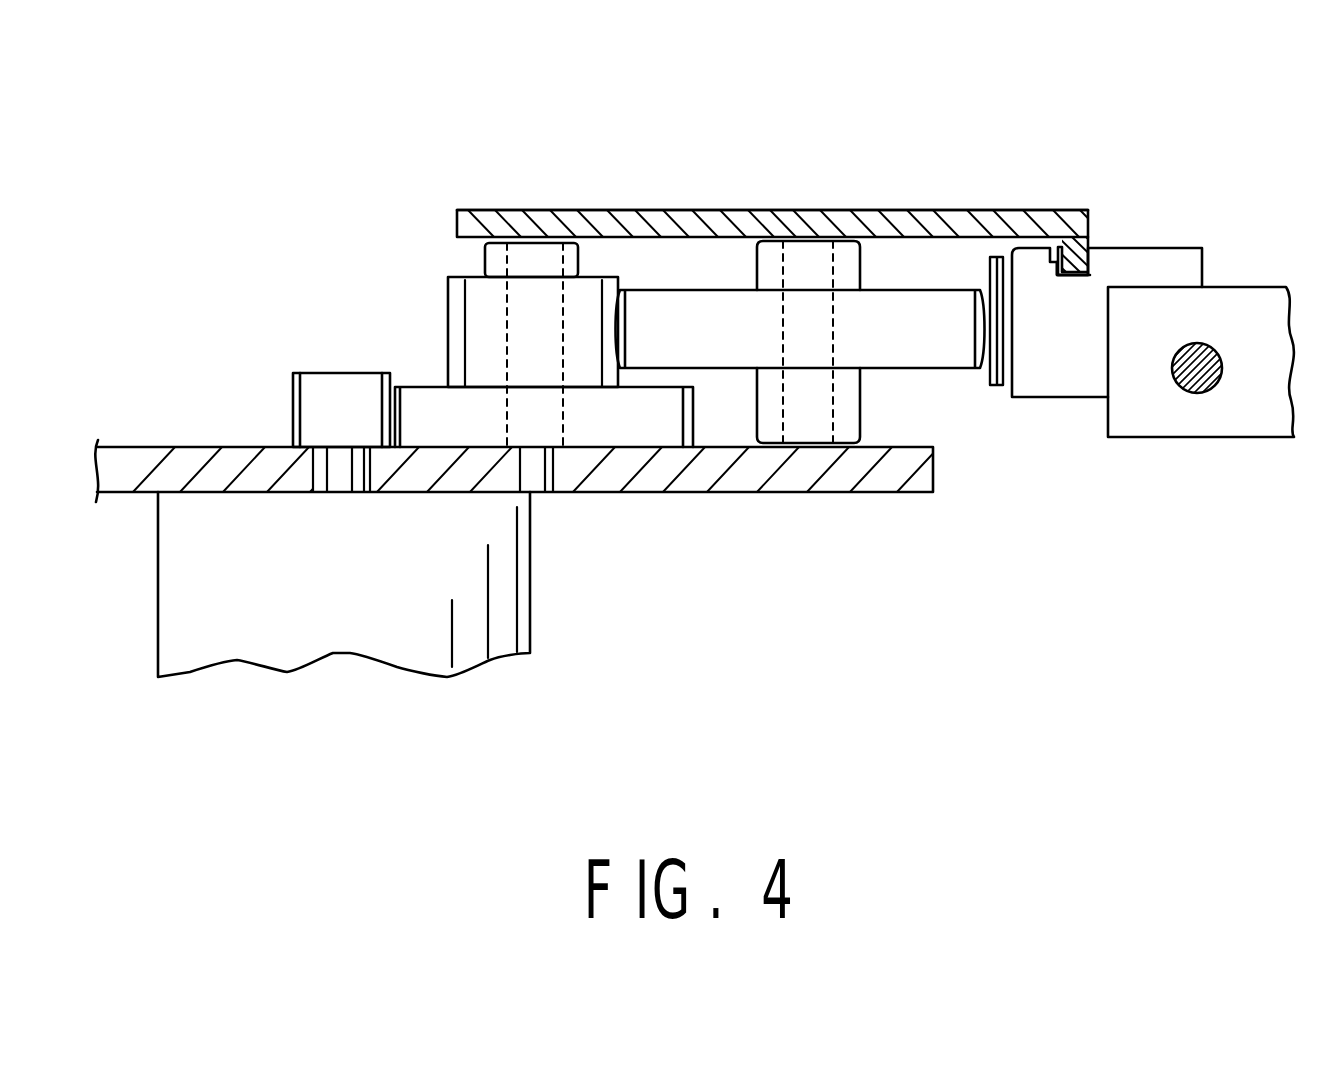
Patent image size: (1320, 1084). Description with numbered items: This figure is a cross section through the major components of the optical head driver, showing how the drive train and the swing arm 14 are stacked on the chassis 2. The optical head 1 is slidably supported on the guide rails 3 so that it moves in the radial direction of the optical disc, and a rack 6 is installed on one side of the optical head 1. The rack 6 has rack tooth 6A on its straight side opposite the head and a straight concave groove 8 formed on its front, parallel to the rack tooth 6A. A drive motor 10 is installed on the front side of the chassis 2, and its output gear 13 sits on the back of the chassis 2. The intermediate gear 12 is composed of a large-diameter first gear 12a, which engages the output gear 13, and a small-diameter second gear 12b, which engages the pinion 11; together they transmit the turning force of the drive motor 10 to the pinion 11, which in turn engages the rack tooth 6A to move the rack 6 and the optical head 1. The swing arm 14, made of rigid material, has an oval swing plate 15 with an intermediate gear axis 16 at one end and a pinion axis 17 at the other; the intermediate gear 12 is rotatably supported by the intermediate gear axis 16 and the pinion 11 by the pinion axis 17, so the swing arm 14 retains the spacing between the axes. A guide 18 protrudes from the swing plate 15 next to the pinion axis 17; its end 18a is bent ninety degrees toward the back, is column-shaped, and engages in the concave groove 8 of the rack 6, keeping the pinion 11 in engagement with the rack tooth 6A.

The optical head 1 is at (1273, 415).
The chassis 2 is at (873, 487).
The guide rails 3 is at (1193, 397).
The rack 6 is at (1170, 272).
The rack tooth 6A is at (993, 385).
The concave groove 8 is at (1093, 270).
The drive motor 10 is at (352, 627).
The pinion 11 is at (918, 312).
The intermediate gear 12 is at (556, 436).
The first gear 12a is at (617, 422).
The second gear 12b is at (488, 357).
The output gear 13 is at (338, 393).
The swing arm 14 is at (735, 203).
The swing plate 15 is at (647, 212).
The intermediate gear axis 16 is at (541, 295).
The pinion axis 17 is at (833, 241).
The guide 18 is at (1124, 184).
The end 18a is at (1100, 228).